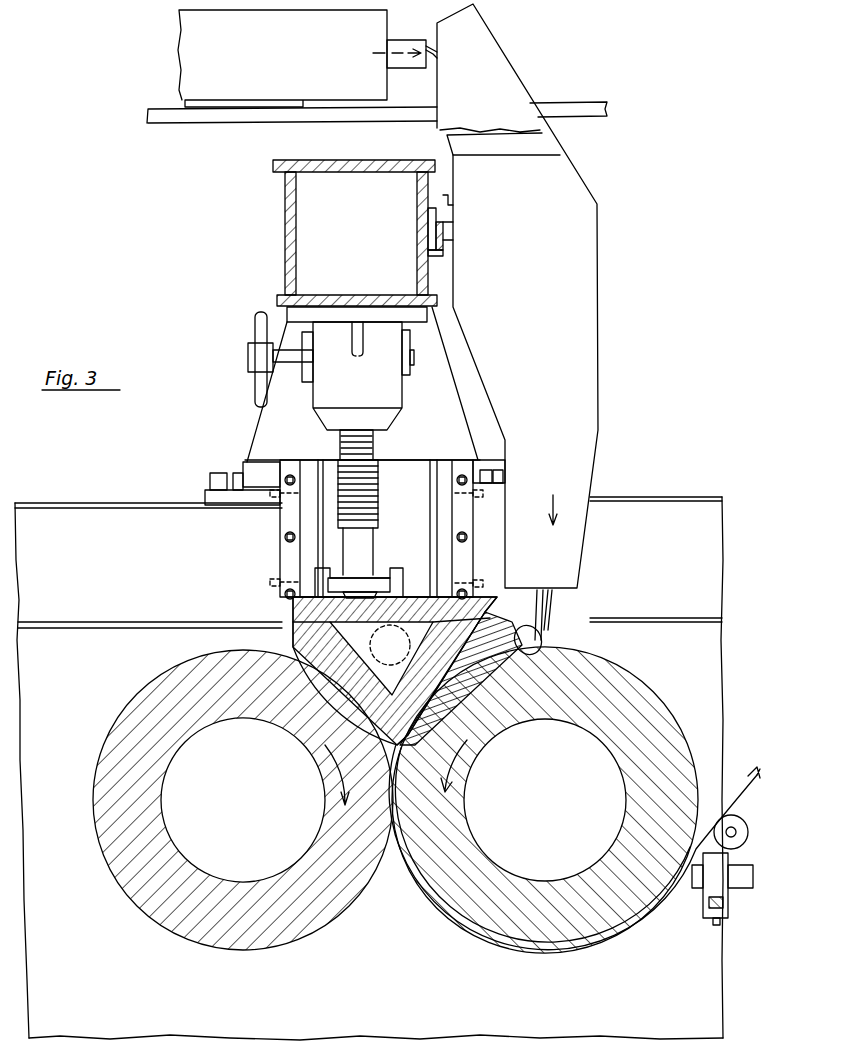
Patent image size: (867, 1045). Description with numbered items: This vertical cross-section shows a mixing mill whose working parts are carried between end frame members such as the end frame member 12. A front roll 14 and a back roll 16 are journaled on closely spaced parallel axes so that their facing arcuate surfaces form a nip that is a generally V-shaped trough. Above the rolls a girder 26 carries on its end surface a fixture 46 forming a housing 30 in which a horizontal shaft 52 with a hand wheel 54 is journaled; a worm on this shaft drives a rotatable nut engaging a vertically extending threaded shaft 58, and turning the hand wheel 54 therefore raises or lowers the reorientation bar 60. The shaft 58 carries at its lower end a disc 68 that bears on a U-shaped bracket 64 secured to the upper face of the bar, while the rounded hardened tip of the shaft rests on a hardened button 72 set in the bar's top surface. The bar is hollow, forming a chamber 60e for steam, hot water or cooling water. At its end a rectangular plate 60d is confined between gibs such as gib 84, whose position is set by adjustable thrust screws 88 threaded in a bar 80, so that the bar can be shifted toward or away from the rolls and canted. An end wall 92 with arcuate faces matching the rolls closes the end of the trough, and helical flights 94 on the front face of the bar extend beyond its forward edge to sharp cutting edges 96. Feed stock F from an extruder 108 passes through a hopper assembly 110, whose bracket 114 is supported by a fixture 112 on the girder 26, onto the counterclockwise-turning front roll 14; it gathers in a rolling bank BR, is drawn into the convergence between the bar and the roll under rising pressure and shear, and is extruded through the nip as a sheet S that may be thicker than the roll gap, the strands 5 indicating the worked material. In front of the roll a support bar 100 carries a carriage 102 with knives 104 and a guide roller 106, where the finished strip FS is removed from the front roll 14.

The end frame member 12 is at (332, 986).
The front roll 14 is at (635, 690).
The back roll 16 is at (145, 690).
The girder 26 is at (285, 262).
The housing 30 is at (440, 422).
The fixture 46 is at (370, 385).
The horizontal shaft 52 is at (288, 368).
The hand wheel 54 is at (255, 330).
The threaded shaft 58 is at (338, 442).
The reorientation bar 60 is at (293, 610).
The rectangular plate 60d is at (416, 496).
The chamber 60e is at (390, 645).
The U-shaped bracket 64 is at (403, 575).
The disc 68 is at (378, 575).
The hardened button 72 is at (392, 588).
The bar 80 is at (285, 532).
The gib 84 is at (300, 554).
The adjustable thrust screw 88 is at (270, 494).
The end wall 92 is at (295, 640).
The flight 94 is at (545, 610).
The cutting edge 96 is at (550, 592).
The support bar 100 is at (703, 916).
The carriage 102 is at (728, 912).
The knife 104 is at (690, 890).
The guide roller 106 is at (742, 826).
The extruder 108 is at (284, 45).
The hopper assembly 110 is at (540, 148).
The fixture 112 is at (445, 248).
The bracket 114 is at (428, 216).
The strand 5 is at (398, 732).
The bead roll BR is at (461, 678).
The feed stock F is at (433, 40).
The strip FS is at (720, 800).
The sheet S is at (480, 952).